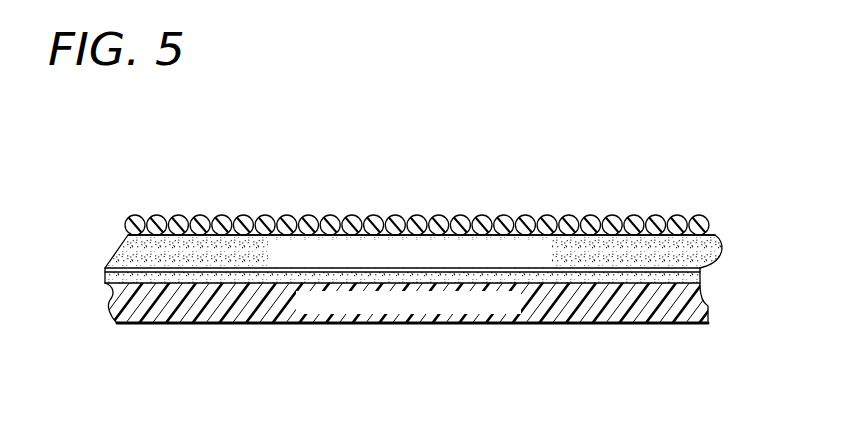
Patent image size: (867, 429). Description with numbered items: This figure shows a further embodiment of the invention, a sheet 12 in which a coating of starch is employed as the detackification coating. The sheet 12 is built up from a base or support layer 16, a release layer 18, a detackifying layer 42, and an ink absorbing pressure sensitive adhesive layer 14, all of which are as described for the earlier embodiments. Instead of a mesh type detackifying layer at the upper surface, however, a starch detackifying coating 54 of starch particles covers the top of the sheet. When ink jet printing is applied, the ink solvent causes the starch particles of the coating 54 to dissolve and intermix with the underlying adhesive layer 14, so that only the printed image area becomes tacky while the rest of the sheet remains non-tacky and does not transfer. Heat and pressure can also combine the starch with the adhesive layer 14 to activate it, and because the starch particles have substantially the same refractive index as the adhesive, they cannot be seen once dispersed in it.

The sheet 12 is at (571, 204).
The ink absorbing pressure sensitive adhesive layer 14 is at (713, 250).
The base or support layer 16 is at (711, 313).
The release layer 18 is at (103, 284).
The detackifying layer 42 is at (703, 273).
The starch detackifying coating 54 is at (522, 215).